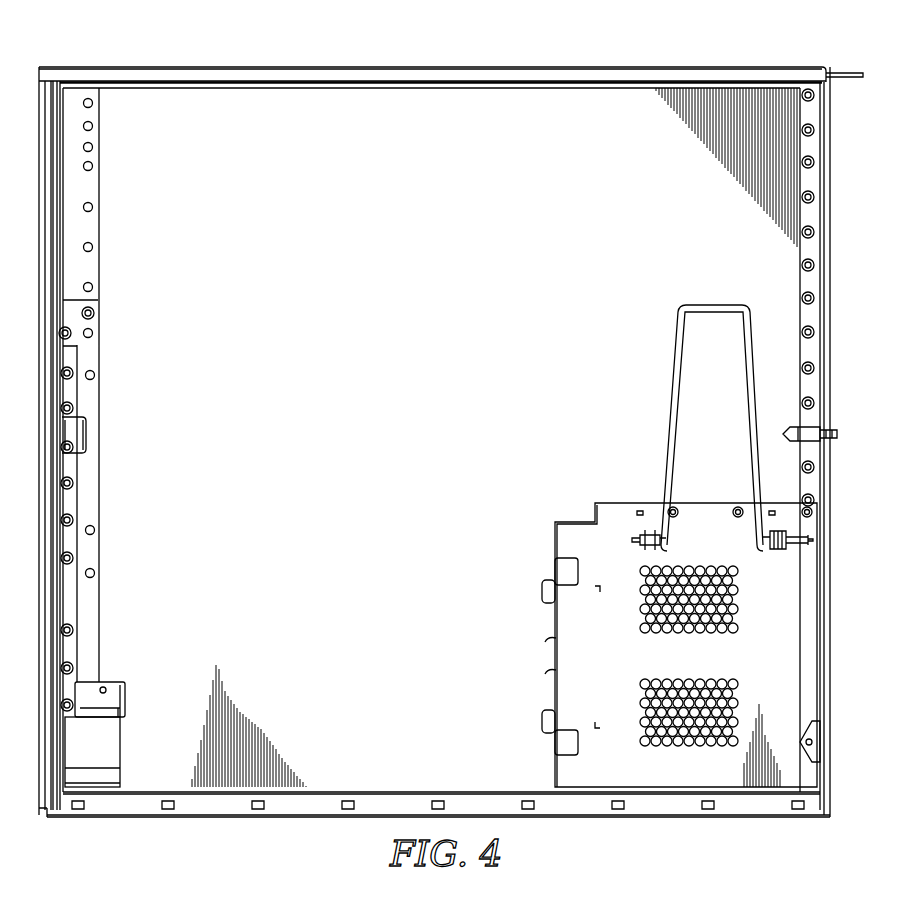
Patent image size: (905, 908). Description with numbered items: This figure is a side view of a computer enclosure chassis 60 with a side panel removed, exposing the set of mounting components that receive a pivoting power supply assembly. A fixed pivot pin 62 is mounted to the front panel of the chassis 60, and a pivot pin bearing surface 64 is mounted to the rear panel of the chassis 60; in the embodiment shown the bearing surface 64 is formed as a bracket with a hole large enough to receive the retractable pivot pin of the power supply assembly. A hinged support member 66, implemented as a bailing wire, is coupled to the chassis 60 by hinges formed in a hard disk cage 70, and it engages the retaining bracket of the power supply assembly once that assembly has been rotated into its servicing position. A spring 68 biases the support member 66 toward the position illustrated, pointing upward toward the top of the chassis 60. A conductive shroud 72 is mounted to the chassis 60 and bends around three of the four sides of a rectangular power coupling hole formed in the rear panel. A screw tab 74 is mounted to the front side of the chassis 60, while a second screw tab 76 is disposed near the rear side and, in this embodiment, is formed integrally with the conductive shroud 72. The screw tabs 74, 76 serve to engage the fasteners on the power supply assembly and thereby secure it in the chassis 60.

The computer enclosure chassis 60 is at (432, 66).
The fixed pivot pin 62 is at (783, 430).
The pivot pin bearing surface 64 is at (88, 433).
The hinged support member 66 is at (715, 304).
The spring 68 is at (775, 550).
The hard disk cage 70 is at (556, 540).
The conductive shroud 72 is at (120, 745).
The screw tab 74 is at (808, 728).
The screw tab 76 is at (104, 688).